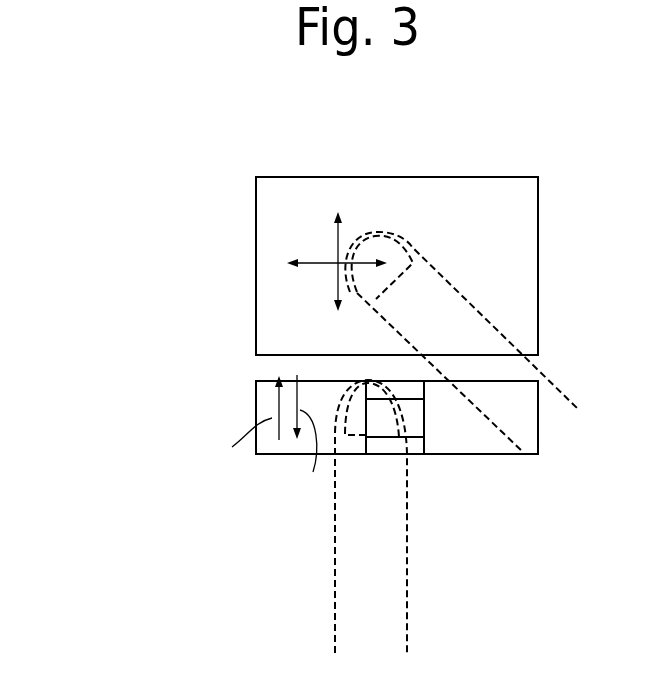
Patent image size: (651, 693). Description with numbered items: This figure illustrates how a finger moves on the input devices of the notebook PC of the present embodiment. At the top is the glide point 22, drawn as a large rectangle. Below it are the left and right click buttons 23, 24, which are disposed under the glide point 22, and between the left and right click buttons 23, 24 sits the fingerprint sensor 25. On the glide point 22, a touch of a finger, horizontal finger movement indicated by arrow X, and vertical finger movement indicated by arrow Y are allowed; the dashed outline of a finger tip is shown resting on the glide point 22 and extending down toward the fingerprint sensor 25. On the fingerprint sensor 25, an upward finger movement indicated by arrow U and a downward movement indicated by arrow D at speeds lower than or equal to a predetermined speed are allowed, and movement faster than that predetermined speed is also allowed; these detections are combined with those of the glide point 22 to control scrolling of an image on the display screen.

The glide point 22 is at (288, 193).
The left click button 23 is at (262, 401).
The right click button 24 is at (482, 438).
The fingerprint sensor 25 is at (413, 420).